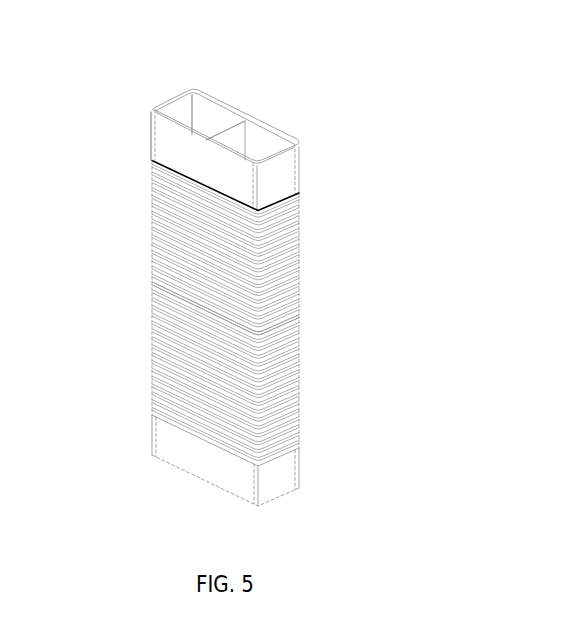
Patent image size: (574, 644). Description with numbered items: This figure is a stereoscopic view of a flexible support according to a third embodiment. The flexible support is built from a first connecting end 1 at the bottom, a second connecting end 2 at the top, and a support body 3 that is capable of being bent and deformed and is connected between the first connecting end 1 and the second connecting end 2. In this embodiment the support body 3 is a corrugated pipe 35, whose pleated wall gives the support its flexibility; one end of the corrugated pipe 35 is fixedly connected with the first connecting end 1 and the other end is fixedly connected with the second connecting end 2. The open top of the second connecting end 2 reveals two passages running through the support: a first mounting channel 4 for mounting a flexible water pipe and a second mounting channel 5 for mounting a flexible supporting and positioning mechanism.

The first connecting end 1 is at (178, 470).
The second connecting end 2 is at (145, 134).
The support body 3 is at (125, 265).
The first mounting channel 4 is at (270, 141).
The second mounting channel 5 is at (201, 111).
The corrugated pipe 35 is at (310, 288).